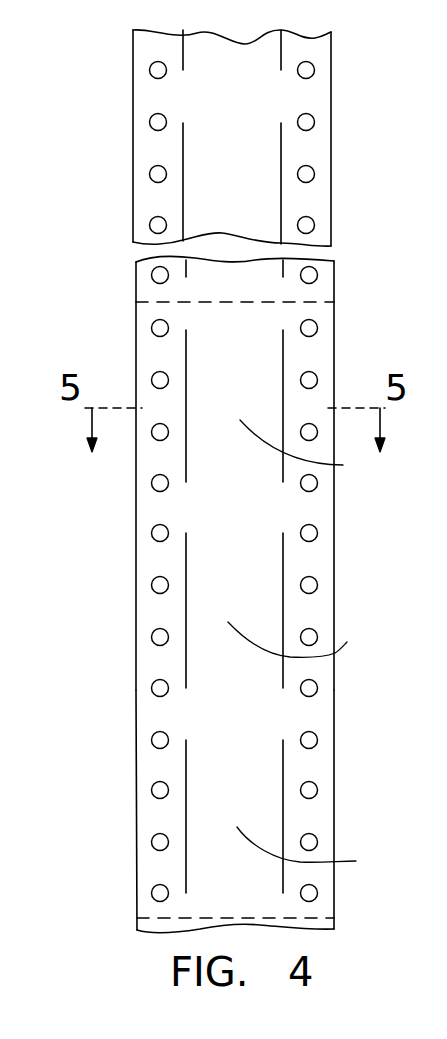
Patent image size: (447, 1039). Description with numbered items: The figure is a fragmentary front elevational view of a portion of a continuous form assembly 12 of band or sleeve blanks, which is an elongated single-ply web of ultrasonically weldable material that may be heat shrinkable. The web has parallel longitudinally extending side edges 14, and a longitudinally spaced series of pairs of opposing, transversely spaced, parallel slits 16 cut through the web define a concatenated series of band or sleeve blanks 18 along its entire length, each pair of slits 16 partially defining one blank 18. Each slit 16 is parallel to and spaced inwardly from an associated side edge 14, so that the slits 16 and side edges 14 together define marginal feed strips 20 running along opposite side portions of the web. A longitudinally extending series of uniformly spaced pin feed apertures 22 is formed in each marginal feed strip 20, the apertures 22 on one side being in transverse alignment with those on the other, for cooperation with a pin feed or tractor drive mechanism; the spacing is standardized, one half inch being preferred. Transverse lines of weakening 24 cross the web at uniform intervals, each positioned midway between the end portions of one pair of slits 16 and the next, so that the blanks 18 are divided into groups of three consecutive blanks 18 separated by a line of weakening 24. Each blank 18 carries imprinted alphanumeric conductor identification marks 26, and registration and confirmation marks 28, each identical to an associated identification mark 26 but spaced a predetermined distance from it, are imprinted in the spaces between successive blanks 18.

The continuous form assembly 12 is at (114, 167).
The side edge 14 is at (134, 318).
The slit 16 is at (183, 155).
The band or sleeve blank 18 is at (257, 222).
The marginal feed strip 20 is at (152, 716).
The pin feed aperture 22 is at (158, 594).
The line of weakening 24 is at (308, 299).
The conductor identification mark 26 is at (228, 213).
The registration and confirmation mark 28 is at (237, 107).